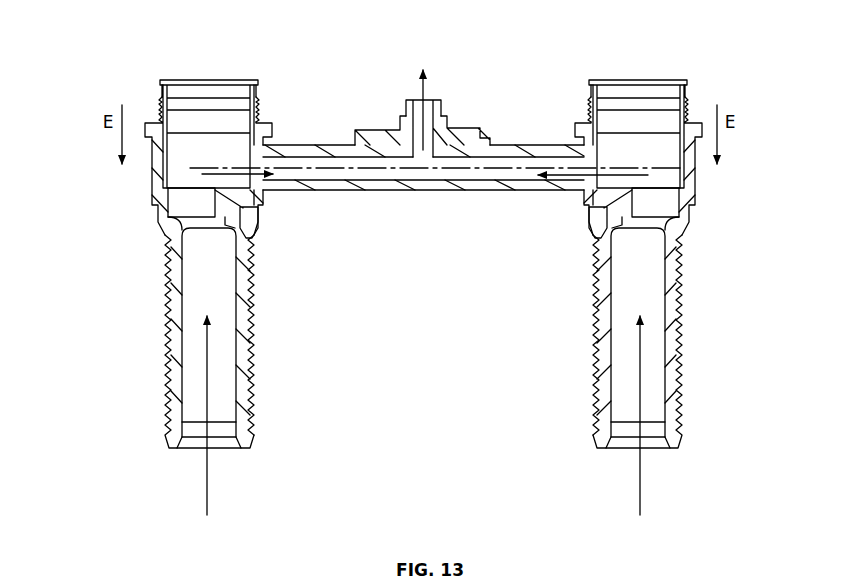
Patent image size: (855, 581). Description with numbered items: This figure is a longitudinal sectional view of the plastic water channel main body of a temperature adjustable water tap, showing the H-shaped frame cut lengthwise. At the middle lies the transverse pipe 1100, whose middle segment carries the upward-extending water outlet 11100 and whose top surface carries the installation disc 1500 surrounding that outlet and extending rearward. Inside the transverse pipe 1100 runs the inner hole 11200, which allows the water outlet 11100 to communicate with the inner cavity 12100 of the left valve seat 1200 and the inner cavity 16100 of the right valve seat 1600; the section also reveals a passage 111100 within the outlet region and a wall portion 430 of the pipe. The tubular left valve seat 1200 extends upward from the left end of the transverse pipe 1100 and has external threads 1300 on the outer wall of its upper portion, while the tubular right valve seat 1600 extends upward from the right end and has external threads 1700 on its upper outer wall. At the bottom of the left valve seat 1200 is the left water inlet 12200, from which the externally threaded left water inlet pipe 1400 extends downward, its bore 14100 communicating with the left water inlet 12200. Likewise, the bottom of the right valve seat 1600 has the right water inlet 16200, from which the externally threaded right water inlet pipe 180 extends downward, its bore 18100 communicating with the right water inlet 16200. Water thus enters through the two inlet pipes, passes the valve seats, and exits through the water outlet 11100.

The transverse pipe 1100 is at (526, 145).
The water outlet 11100 is at (440, 132).
The flow channel 111100 is at (427, 108).
The inner hole 11200 is at (327, 165).
The tube wall 430 is at (533, 195).
The installation disc 1500 is at (363, 130).
The left valve seat 1200 is at (160, 153).
The external threads 1300 is at (155, 103).
The inner cavity 12100 is at (208, 97).
The left water inlet 12200 is at (193, 209).
The left water inlet pipe 1400 is at (175, 368).
The first tube channel 14100 is at (198, 277).
The right valve seat 1600 is at (677, 193).
The external threads 1700 is at (690, 105).
The inner cavity 16100 is at (633, 145).
The right water inlet 16200 is at (647, 203).
The second threaded tube 180 is at (683, 378).
The second tube channel 18100 is at (655, 300).